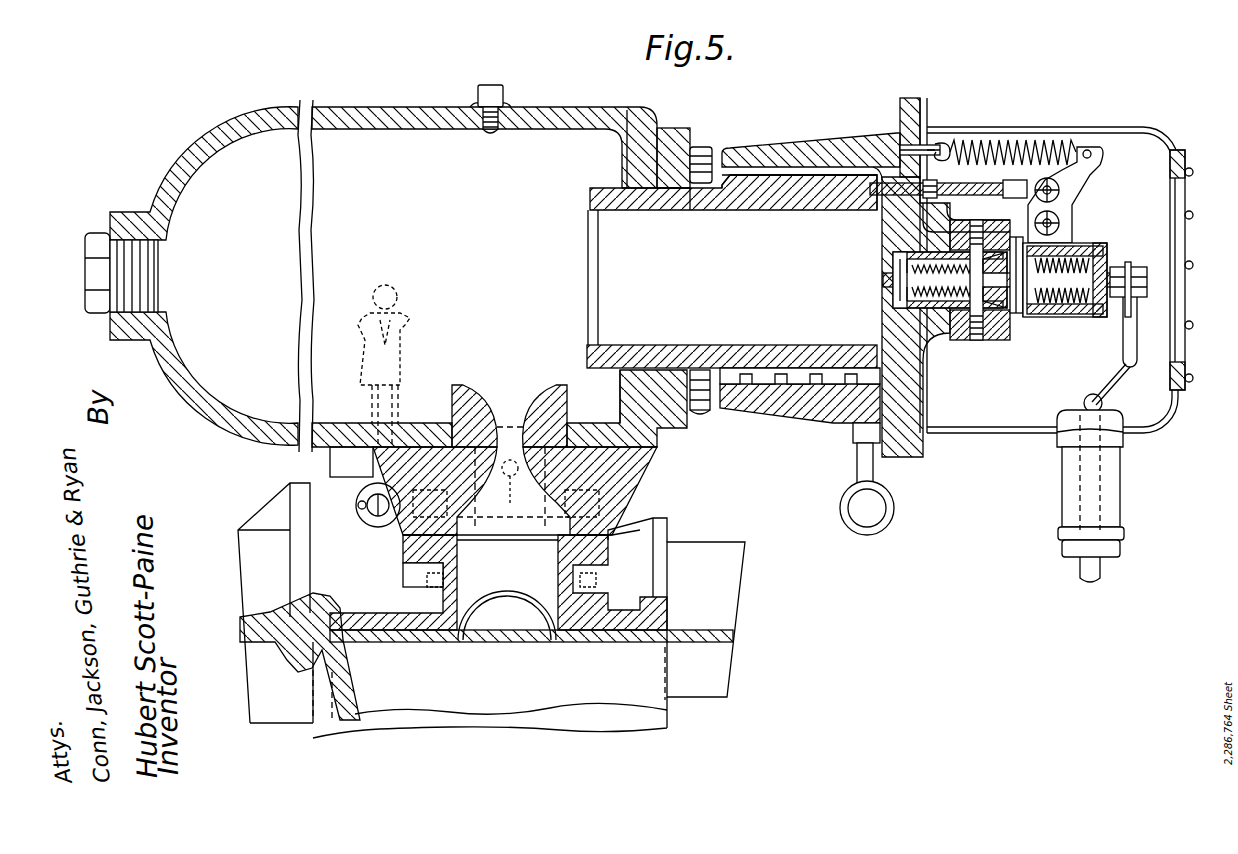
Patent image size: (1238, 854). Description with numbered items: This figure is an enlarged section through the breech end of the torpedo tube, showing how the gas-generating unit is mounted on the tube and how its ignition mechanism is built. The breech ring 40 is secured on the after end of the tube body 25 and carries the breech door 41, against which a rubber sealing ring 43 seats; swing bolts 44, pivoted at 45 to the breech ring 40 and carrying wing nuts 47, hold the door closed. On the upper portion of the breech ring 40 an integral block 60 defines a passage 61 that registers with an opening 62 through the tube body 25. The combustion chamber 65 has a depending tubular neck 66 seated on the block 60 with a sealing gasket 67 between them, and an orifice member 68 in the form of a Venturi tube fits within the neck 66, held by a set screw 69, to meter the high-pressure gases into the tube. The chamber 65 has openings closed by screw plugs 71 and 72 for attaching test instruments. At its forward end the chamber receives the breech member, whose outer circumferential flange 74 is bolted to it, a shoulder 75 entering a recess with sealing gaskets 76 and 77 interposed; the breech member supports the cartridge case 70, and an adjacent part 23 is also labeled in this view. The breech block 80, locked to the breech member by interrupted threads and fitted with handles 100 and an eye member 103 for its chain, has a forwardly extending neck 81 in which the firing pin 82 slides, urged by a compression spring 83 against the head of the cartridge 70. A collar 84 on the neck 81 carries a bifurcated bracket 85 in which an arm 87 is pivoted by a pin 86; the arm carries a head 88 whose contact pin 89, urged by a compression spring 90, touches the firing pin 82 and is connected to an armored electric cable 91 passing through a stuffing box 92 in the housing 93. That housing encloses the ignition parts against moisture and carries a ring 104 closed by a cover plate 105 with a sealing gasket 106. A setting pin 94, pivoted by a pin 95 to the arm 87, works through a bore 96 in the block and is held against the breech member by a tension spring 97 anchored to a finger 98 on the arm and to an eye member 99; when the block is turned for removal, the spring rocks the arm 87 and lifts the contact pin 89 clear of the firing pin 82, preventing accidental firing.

The combustion chamber 65 is at (338, 110).
The screw plug 71 is at (135, 268).
The screw plug 72 is at (483, 103).
The sealing gasket 77 is at (634, 130).
The sealing gasket 76 is at (668, 130).
The outer circumferential flange 74 is at (690, 148).
The cartridge case 70 is at (732, 271).
The sleeve 23 is at (735, 185).
The shoulder 75 is at (660, 192).
The breech block 80 is at (800, 150).
The bore 96 is at (912, 145).
The housing 93 is at (1050, 127).
The cover plate 105 is at (1180, 186).
The sealing gasket 106 is at (1182, 222).
The tension spring 97 is at (990, 140).
The eye member 99 is at (938, 145).
The finger 98 is at (1092, 158).
The arm 87 is at (1060, 188).
The pin 95 is at (1074, 205).
The bifurcated bracket 85 is at (1070, 209).
The pin 86 is at (1060, 224).
The setting pin 94 is at (882, 194).
The firing pin 82 is at (881, 280).
The compression spring 83 is at (930, 333).
The collar 84 is at (1000, 341).
The neck 81 is at (1018, 318).
The head 88 is at (1064, 318).
The contact pin 89 is at (1086, 318).
The compression spring 90 is at (1058, 318).
The ring 104 is at (1115, 372).
The electric cable 91 is at (1104, 398).
The stuffing box 92 is at (1110, 480).
The handles 100 is at (745, 406).
The eye member 103 is at (876, 482).
The orifice member 68 is at (545, 388).
The set screw 69 is at (513, 472).
The wing nuts 47 is at (398, 307).
The swing bolts 44 is at (400, 393).
The integral block 60 is at (400, 632).
The passage 61 is at (558, 600).
The opening 62 is at (506, 600).
The breech ring 40 is at (660, 598).
The tube body 25 is at (690, 548).
The breech door 41 is at (258, 548).
The rubber sealing ring 43 is at (292, 616).
The pivot 45 is at (380, 517).
The tubular neck 66 is at (622, 452).
The sealing gasket 67 is at (585, 525).